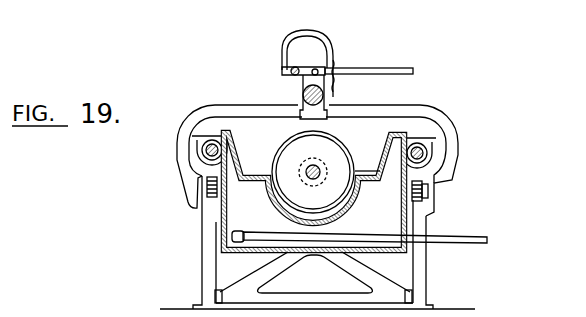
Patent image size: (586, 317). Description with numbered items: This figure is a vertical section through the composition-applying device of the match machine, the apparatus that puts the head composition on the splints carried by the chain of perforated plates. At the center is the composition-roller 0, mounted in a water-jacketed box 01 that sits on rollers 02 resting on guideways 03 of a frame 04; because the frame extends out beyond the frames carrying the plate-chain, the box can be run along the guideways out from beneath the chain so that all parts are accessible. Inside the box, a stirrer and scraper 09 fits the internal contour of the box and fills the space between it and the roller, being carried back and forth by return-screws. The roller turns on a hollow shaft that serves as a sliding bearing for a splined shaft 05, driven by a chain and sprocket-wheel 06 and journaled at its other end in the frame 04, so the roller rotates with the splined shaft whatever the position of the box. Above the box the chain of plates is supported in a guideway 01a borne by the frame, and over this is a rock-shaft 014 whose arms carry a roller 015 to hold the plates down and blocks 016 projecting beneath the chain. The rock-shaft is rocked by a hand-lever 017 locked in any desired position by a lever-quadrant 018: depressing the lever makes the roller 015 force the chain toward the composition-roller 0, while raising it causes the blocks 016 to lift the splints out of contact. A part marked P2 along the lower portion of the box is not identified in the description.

The composition-roller 0 is at (332, 143).
The water-jacketed box 01 is at (222, 218).
The guideway 01a is at (377, 116).
The rollers 02 is at (428, 187).
The guideways 03 is at (420, 198).
The frame 04 is at (426, 222).
The splined shaft 05 is at (318, 178).
The sprocket-wheel 06 is at (332, 154).
The stirrer and scraper 09 is at (372, 174).
The rock-shaft 014 is at (290, 74).
The roller 015 is at (327, 98).
The blocks 016 is at (304, 120).
The hand-lever 017 is at (370, 68).
The lever-quadrant 018 is at (318, 38).
The rod P2 is at (453, 245).